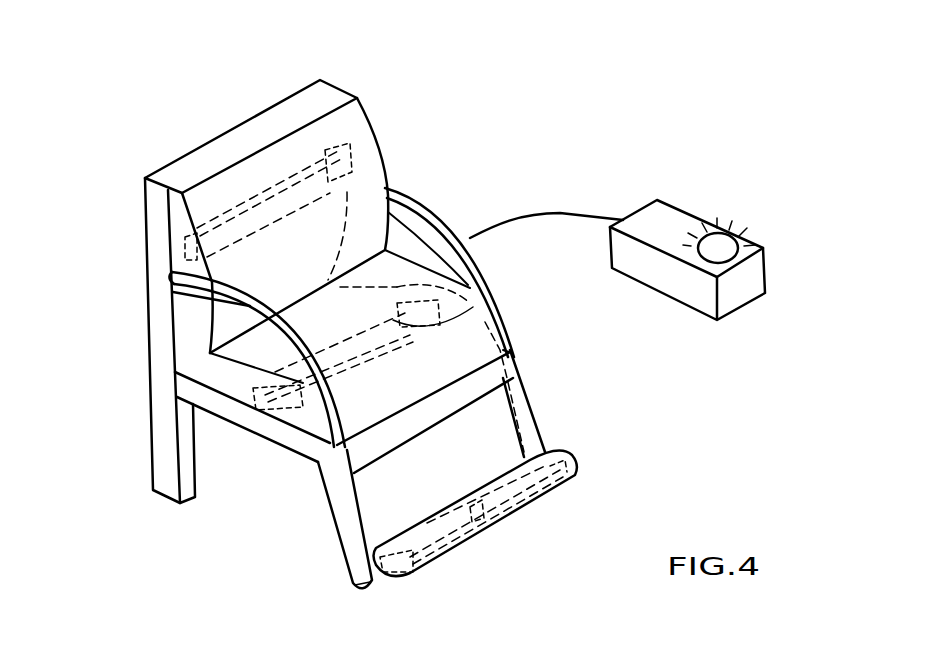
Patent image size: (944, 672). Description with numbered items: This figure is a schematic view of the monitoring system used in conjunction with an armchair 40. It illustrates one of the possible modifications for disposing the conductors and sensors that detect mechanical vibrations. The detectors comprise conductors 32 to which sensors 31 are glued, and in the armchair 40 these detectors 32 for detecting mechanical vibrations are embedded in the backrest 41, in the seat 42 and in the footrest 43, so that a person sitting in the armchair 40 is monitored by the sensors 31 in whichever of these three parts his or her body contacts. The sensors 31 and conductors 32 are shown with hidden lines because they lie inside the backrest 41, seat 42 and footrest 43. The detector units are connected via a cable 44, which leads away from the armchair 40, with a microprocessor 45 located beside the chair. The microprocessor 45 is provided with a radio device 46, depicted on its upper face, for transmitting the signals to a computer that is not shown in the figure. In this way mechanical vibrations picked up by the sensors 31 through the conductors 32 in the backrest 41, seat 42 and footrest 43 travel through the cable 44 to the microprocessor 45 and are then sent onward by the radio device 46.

The sensor 31 is at (337, 183).
The conductor 32 is at (350, 163).
The armchair 40 is at (170, 380).
The backrest 41 is at (247, 178).
The seat 42 is at (215, 372).
The footrest 43 is at (457, 543).
The cable 44 is at (518, 218).
The microprocessor 45 is at (667, 218).
The radio device 46 is at (717, 227).